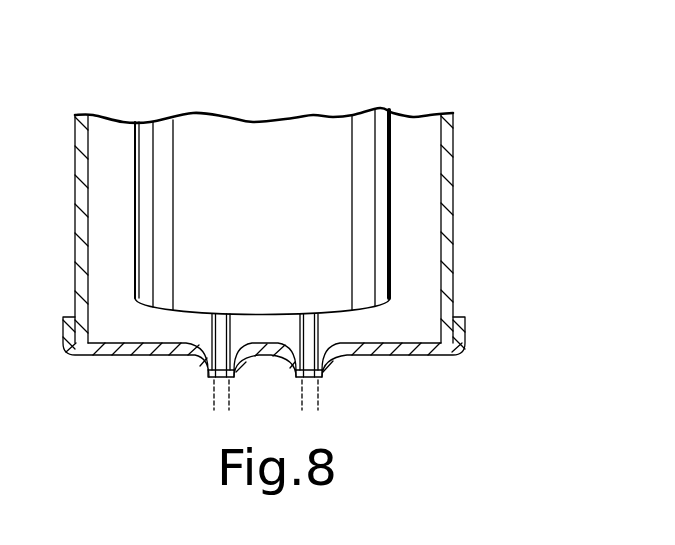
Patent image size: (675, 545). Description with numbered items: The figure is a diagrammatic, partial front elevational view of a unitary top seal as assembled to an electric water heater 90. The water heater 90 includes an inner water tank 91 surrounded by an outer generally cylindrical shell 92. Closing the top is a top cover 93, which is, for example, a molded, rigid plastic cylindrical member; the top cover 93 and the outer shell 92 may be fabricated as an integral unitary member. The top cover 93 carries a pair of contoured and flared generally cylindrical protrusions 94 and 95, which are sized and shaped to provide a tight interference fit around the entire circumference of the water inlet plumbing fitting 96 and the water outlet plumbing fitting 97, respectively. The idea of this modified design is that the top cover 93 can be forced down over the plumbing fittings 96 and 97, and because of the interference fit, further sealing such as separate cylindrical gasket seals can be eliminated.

The water heater 90 is at (308, 271).
The inner water tank 91 is at (386, 190).
The outer generally cylindrical shell 92 is at (447, 197).
The top cover 93 is at (78, 357).
The contoured and flared generally cylindrical protrusion 94 is at (208, 372).
The contoured and flared generally cylindrical protrusion 95 is at (325, 373).
The water inlet plumbing fitting 96 is at (221, 382).
The water outlet plumbing fitting 97 is at (310, 380).